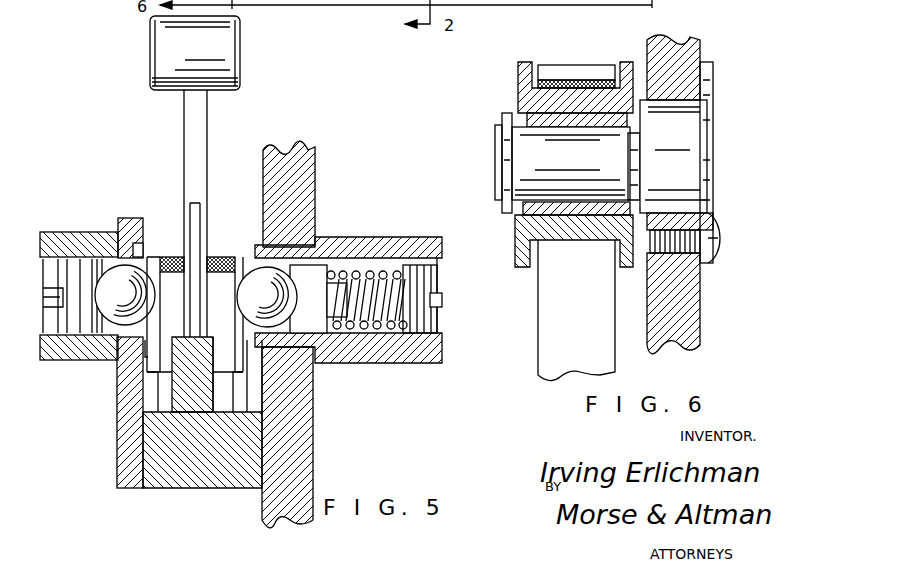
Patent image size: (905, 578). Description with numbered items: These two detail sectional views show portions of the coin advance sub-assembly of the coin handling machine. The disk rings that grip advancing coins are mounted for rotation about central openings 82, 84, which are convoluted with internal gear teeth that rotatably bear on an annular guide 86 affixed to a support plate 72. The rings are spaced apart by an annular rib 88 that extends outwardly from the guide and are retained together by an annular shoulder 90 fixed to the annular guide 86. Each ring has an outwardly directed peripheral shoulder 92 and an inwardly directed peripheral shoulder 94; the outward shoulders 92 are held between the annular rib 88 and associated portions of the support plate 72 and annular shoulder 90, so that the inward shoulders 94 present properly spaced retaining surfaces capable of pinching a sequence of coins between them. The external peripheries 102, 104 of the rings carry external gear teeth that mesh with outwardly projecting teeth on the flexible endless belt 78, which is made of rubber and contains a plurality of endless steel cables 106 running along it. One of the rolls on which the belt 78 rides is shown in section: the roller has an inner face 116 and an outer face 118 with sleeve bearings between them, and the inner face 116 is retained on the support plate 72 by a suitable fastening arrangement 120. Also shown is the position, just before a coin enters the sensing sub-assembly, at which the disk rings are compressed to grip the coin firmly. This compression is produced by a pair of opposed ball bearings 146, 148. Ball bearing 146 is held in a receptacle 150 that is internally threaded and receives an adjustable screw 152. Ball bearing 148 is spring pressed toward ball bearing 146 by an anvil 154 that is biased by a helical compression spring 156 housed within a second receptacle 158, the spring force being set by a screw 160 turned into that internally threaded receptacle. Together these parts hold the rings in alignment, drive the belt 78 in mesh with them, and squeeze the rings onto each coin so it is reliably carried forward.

In FIG. 6, the support plate 72 is at (693, 295).
In FIG. 5, the flexible endless belt 78 is at (167, 257).
In FIG. 6, the flexible endless belt 78 is at (570, 72).
In FIG. 5, the central opening 82 is at (150, 401).
In FIG. 5, the central opening 84 is at (222, 405).
In FIG. 5, the annular guide 86 is at (230, 475).
In FIG. 5, the annular rib 88 is at (195, 380).
In FIG. 5, the annular shoulder 90 is at (123, 220).
In FIG. 5, the outwardly directed peripheral shoulder 92 is at (240, 388).
In FIG. 5, the inwardly directed peripheral shoulder 94 is at (212, 287).
In FIG. 5, the external periphery 102 is at (148, 257).
In FIG. 5, the external periphery 104 is at (243, 270).
In FIG. 5, the endless steel cables 106 is at (184, 200).
In FIG. 6, the inner face 116 is at (495, 180).
In FIG. 6, the outer face 118 is at (522, 230).
In FIG. 6, the fastening arrangement 120 is at (677, 155).
In FIG. 5, the ball bearing 146 is at (103, 355).
In FIG. 5, the ball bearing 148 is at (300, 275).
In FIG. 5, the receptacle 150 is at (60, 238).
In FIG. 5, the adjustable screw 152 is at (115, 330).
In FIG. 5, the anvil 154 is at (317, 280).
In FIG. 5, the helical compression spring 156 is at (372, 273).
In FIG. 5, the receptacle 158 is at (410, 240).
In FIG. 5, the screw 160 is at (430, 318).